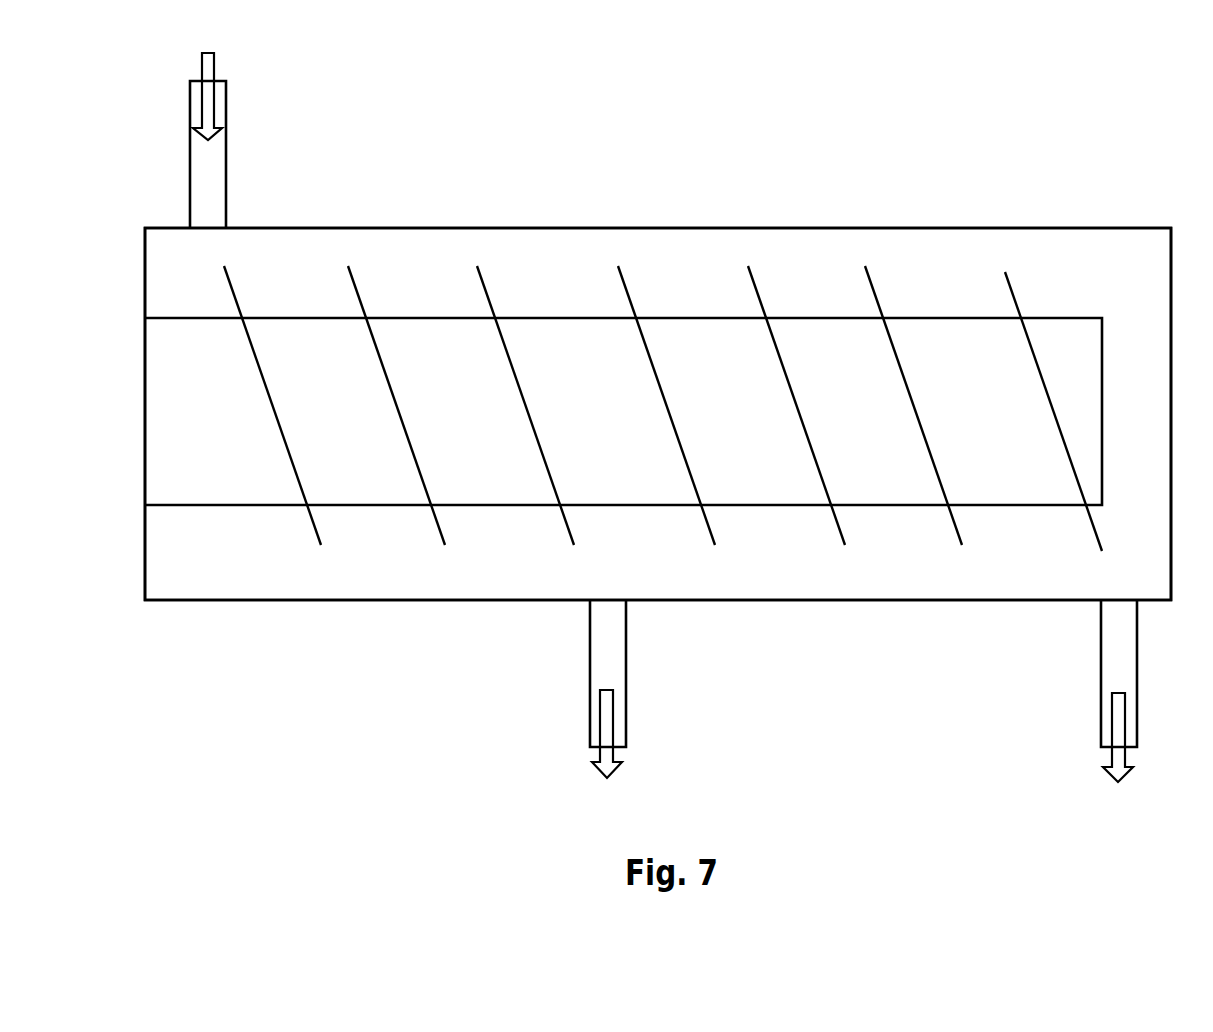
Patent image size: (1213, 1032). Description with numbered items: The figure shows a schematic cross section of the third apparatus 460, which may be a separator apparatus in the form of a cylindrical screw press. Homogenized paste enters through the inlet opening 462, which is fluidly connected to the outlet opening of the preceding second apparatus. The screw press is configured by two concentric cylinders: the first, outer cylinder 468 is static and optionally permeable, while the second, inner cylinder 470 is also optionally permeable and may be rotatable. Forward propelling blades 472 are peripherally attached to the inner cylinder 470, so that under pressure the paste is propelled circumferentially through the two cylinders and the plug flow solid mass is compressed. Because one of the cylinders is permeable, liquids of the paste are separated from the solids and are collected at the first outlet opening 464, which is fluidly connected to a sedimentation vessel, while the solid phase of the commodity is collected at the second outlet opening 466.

The third apparatus 460 is at (1085, 170).
The inlet opening 462 is at (210, 163).
The first outlet opening 464 is at (601, 662).
The second outlet opening 466 is at (1113, 667).
The first outer cylinder 468 is at (795, 227).
The second inner cylinder 470 is at (700, 318).
The forward propelling blades 472 is at (555, 530).